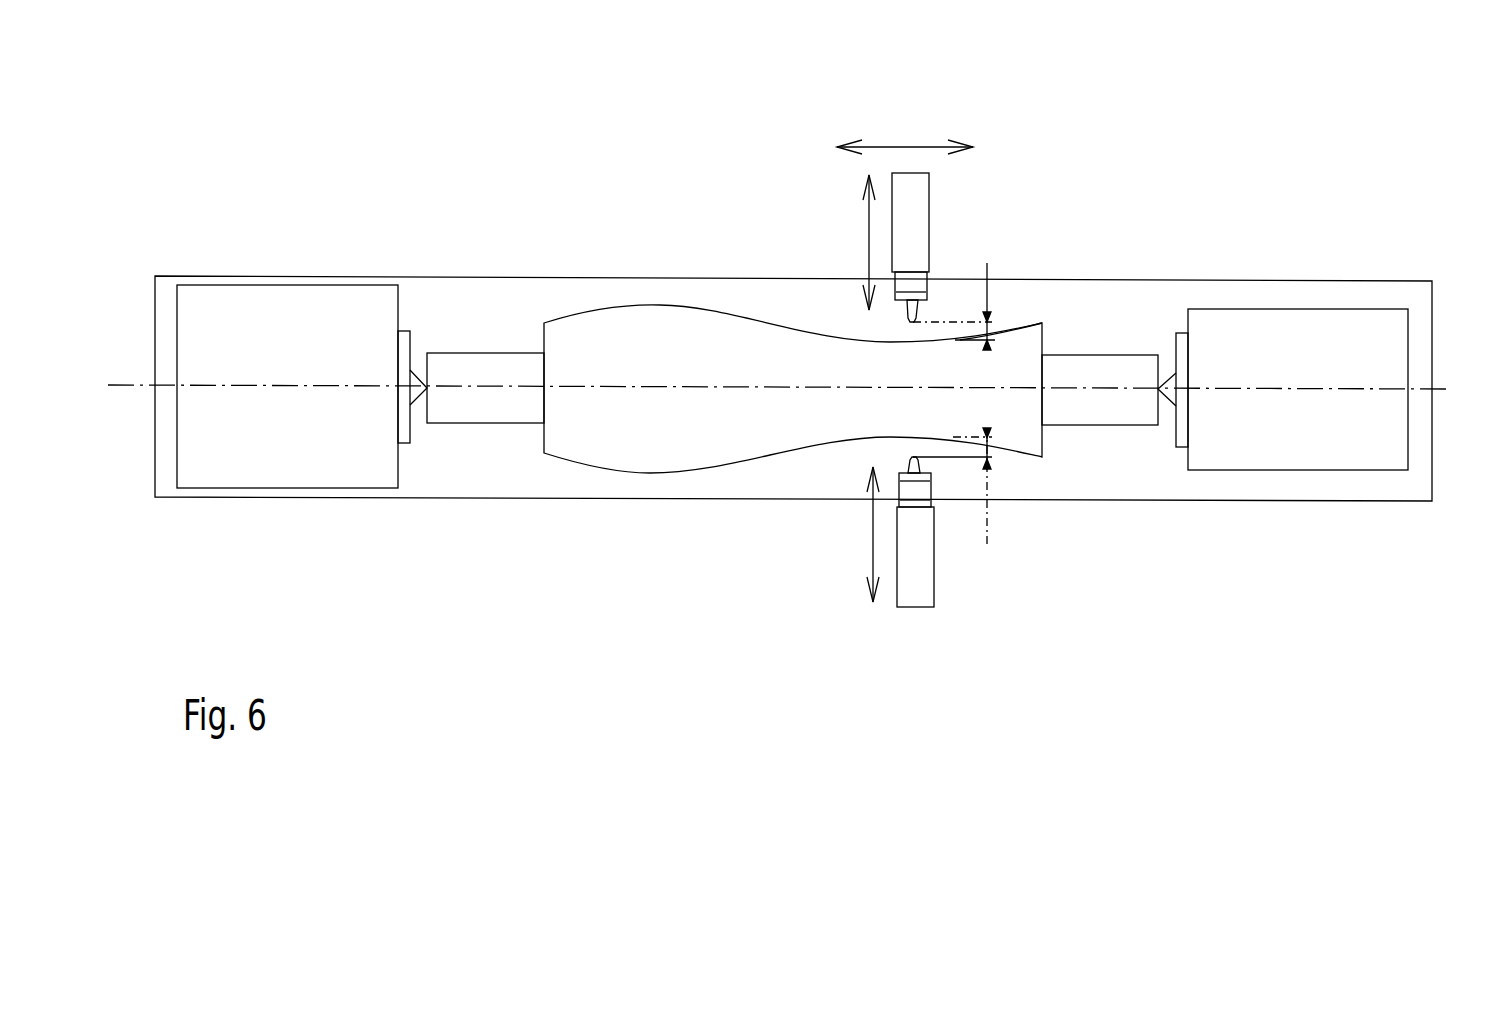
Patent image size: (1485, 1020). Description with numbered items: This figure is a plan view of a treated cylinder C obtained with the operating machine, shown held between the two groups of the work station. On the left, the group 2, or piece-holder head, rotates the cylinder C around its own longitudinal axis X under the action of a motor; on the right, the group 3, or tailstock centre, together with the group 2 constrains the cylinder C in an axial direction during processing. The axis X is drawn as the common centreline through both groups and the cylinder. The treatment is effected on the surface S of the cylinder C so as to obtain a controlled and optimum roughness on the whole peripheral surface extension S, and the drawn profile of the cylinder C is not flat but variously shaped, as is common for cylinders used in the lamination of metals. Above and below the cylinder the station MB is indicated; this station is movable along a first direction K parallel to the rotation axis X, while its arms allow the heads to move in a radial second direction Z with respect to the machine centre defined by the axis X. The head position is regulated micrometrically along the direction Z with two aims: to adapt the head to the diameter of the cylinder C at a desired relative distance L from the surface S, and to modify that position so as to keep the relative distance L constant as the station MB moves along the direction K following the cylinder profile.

The group or piece-holder head 2 is at (266, 317).
The group or tailstock centre 3 is at (1352, 347).
The operating cylinder C is at (708, 427).
The surface of the operating cylinder S is at (1010, 325).
The station of the machine MB is at (1047, 143).
The first direction K is at (905, 133).
The second direction Z is at (864, 388).
The relative distance L is at (955, 392).
The longitudinal axis X is at (779, 373).